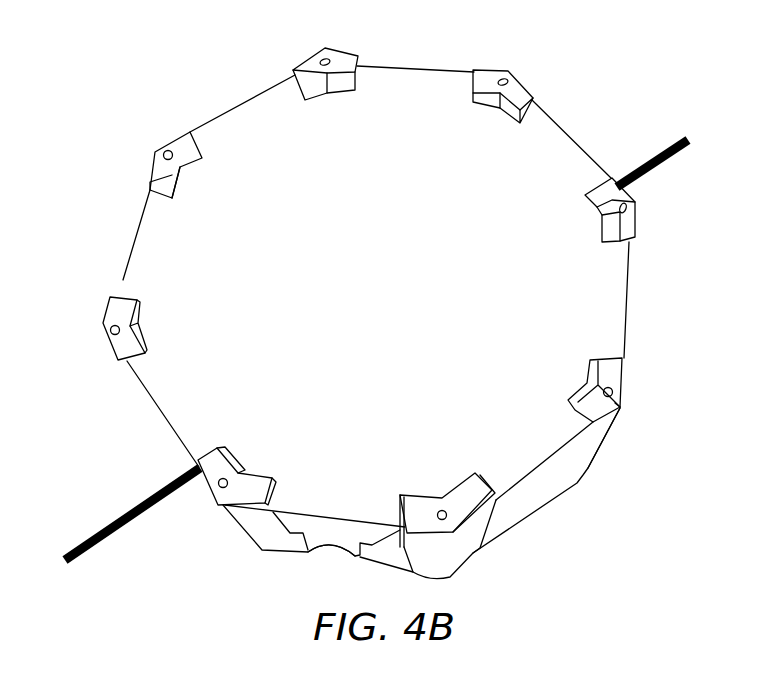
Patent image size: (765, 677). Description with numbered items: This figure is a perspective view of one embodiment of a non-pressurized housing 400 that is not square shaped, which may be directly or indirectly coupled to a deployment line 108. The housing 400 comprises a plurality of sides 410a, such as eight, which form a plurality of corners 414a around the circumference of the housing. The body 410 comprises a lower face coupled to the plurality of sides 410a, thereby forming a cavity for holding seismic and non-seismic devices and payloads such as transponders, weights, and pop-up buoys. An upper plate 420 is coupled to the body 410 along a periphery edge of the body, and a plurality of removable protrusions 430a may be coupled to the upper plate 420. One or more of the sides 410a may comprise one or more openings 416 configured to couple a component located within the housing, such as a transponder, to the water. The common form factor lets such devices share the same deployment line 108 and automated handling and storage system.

The non-pressurized housing 400 is at (66, 232).
The upper plate 420 is at (548, 297).
The removable protrusions 430a is at (514, 92).
The corners 414a is at (615, 408).
The sides 410a is at (578, 457).
The body 410 is at (507, 510).
The openings 416 is at (318, 553).
The deployment line 108 is at (118, 508).